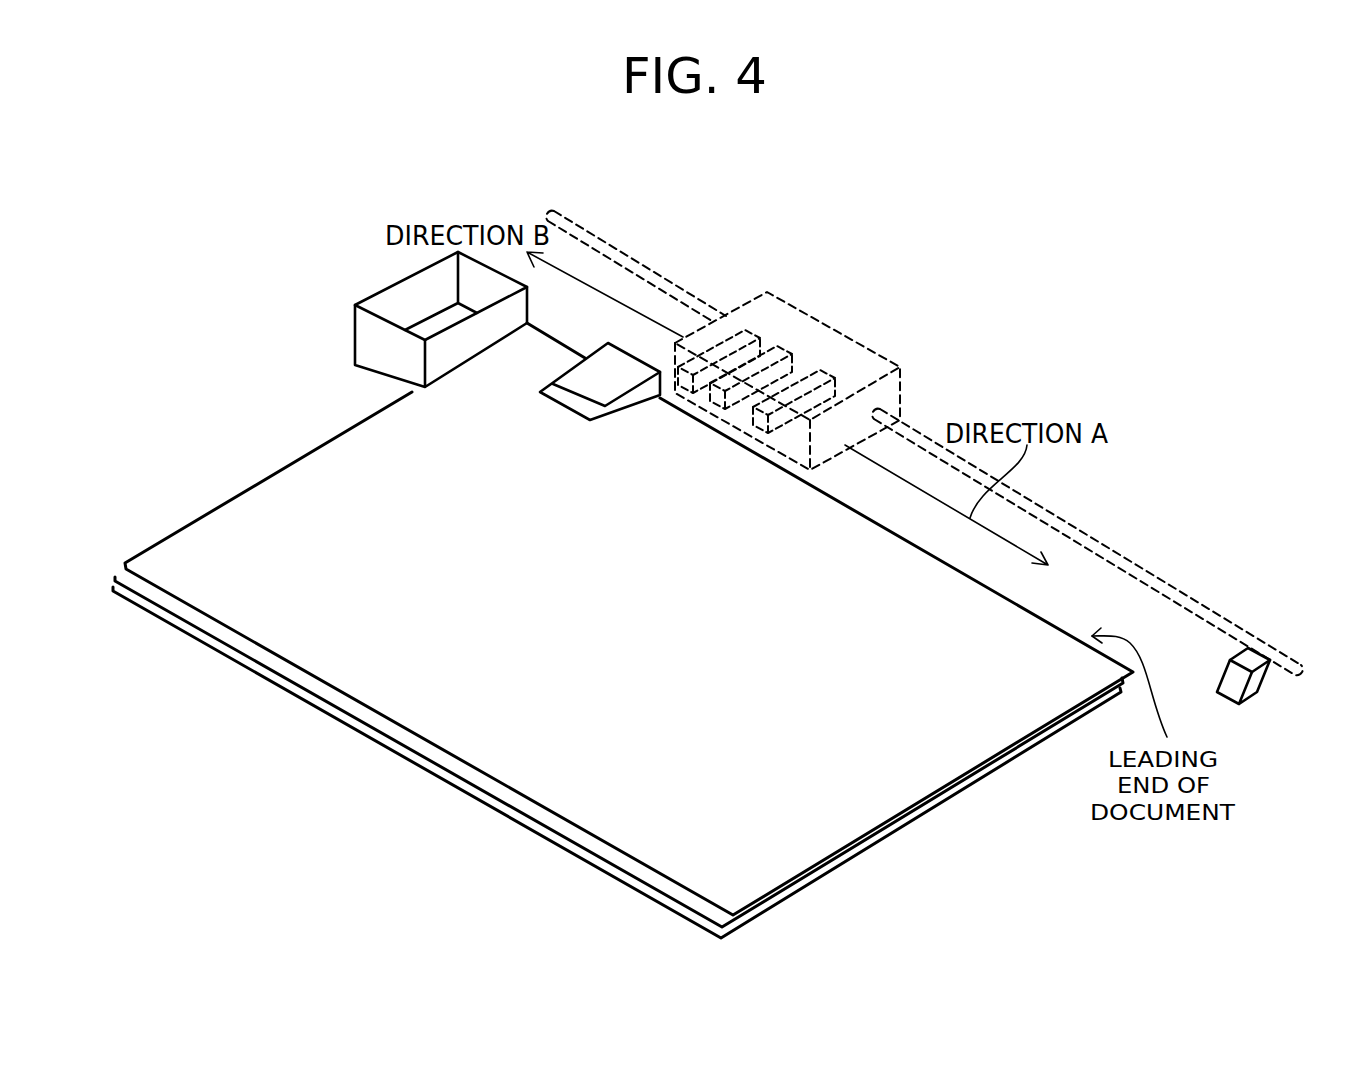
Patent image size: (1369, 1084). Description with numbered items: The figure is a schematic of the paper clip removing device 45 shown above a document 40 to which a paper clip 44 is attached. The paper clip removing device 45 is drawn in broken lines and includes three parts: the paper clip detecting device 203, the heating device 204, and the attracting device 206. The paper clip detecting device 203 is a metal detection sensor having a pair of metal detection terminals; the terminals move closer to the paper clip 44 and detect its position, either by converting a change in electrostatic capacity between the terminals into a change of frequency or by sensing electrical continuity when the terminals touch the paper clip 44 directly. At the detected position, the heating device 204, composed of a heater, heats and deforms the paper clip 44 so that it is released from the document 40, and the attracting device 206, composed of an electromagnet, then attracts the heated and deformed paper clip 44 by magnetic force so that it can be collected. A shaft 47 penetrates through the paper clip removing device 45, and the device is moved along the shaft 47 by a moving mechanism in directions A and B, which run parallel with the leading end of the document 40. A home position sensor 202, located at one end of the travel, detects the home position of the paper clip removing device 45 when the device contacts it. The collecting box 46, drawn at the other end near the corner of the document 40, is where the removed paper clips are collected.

The document 40 is at (190, 543).
The paper clip 44 is at (617, 393).
The paper clip removing device 45 is at (804, 326).
The collecting box 46 is at (392, 282).
The shaft 47 is at (1117, 550).
The home position sensor 202 is at (1253, 690).
The paper clip detecting device 203 is at (760, 327).
The heating device 204 is at (828, 330).
The attracting device 206 is at (823, 370).